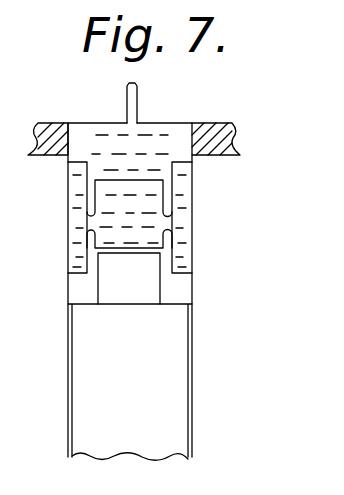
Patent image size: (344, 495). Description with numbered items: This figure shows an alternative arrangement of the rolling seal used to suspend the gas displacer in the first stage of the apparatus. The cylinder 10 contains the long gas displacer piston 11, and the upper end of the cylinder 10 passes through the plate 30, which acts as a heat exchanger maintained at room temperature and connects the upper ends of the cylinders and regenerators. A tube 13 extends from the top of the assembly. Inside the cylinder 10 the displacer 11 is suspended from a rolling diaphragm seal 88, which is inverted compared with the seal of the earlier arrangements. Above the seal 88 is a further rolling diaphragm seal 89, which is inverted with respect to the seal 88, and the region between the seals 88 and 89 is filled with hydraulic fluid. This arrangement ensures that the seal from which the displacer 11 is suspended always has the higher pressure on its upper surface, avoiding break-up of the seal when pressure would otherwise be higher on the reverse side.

The tube 13 is at (133, 98).
The plate 30 is at (217, 147).
The cylinder 10 is at (68, 293).
The rolling diaphragm seal 89 is at (88, 205).
The rolling diaphragm seal 88 is at (88, 247).
The gas displacer piston 11 is at (93, 387).